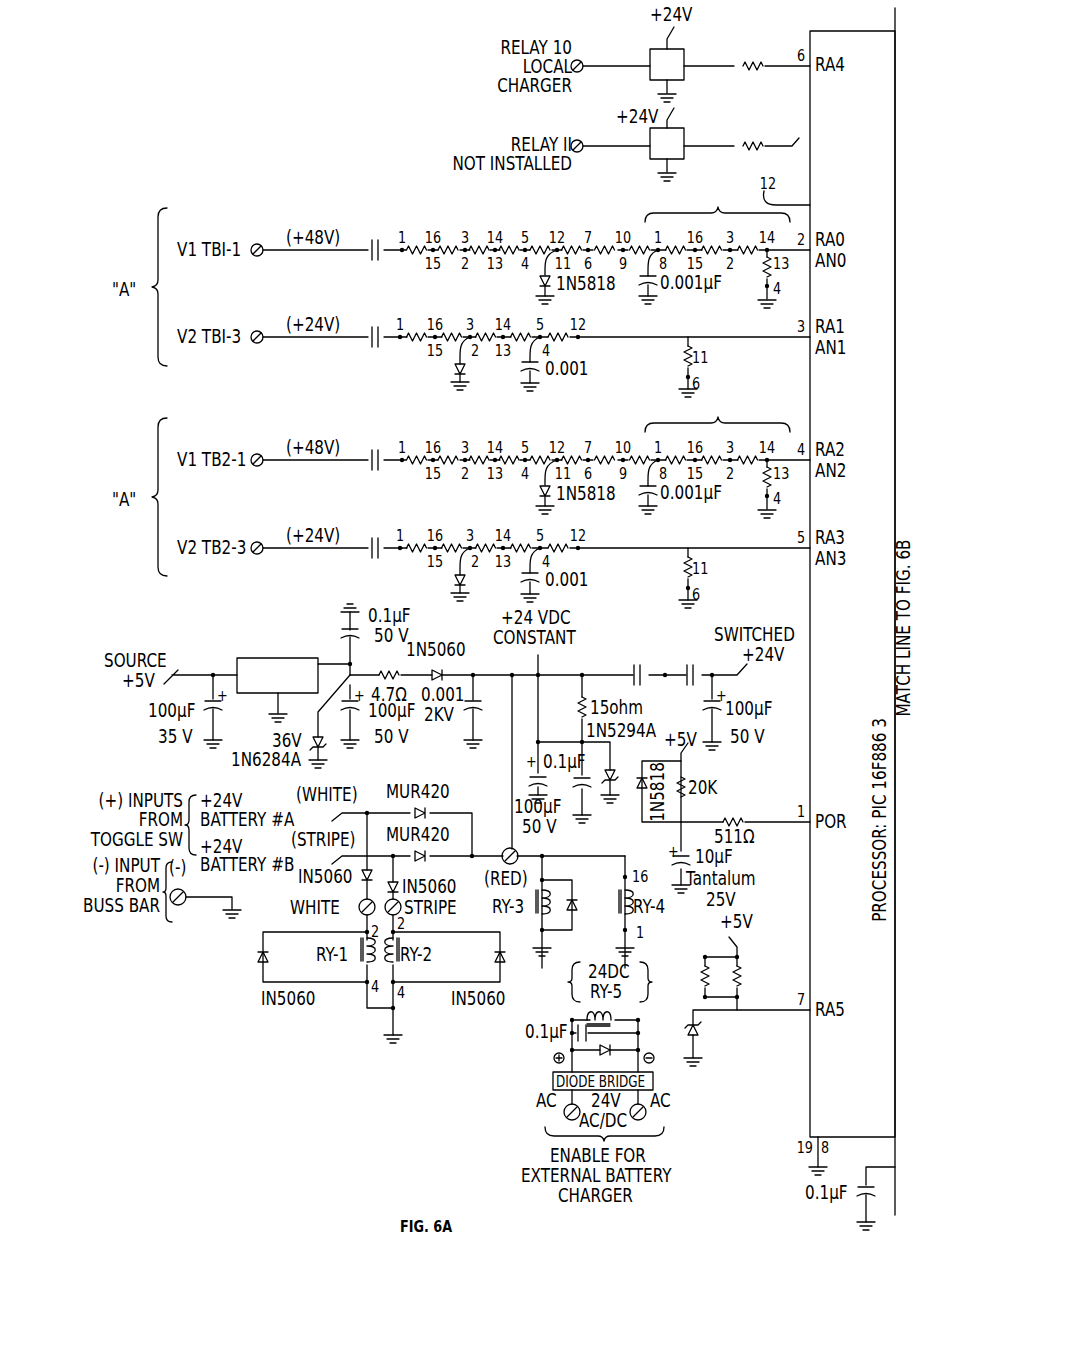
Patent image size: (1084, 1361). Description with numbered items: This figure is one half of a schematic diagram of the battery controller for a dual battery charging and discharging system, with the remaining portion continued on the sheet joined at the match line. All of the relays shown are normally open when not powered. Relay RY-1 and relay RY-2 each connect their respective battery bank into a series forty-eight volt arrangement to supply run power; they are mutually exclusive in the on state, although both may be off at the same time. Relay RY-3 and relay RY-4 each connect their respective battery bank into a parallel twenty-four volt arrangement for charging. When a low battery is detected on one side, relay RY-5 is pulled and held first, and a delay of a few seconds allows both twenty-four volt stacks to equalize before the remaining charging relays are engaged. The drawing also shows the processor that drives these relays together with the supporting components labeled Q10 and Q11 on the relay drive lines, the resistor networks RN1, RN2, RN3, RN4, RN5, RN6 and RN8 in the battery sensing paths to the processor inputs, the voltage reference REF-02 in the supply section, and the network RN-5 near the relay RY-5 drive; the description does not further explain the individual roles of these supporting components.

The transistor Q10 relay 10 local charger Q10 is at (667, 64).
The transistor Q11 relay 11 not installed Q11 is at (667, 144).
The resistor network RN8 is at (755, 102).
The resistor network RN1 is at (528, 259).
The resistor network RN2 is at (724, 248).
The resistor network RN3 is at (603, 350).
The resistor network RN4 is at (570, 504).
The resistor network RN5 is at (724, 458).
The resistor network RN6 is at (603, 561).
The relay RY-1 is at (632, 662).
The relay RY-2 is at (687, 662).
The relay RY-3 is at (376, 286).
The relay RY-4 is at (373, 496).
The relay RY-5 is at (705, 1022).
The voltage reference REF-02 is at (277, 683).
The resistor network RN-5 is at (738, 973).